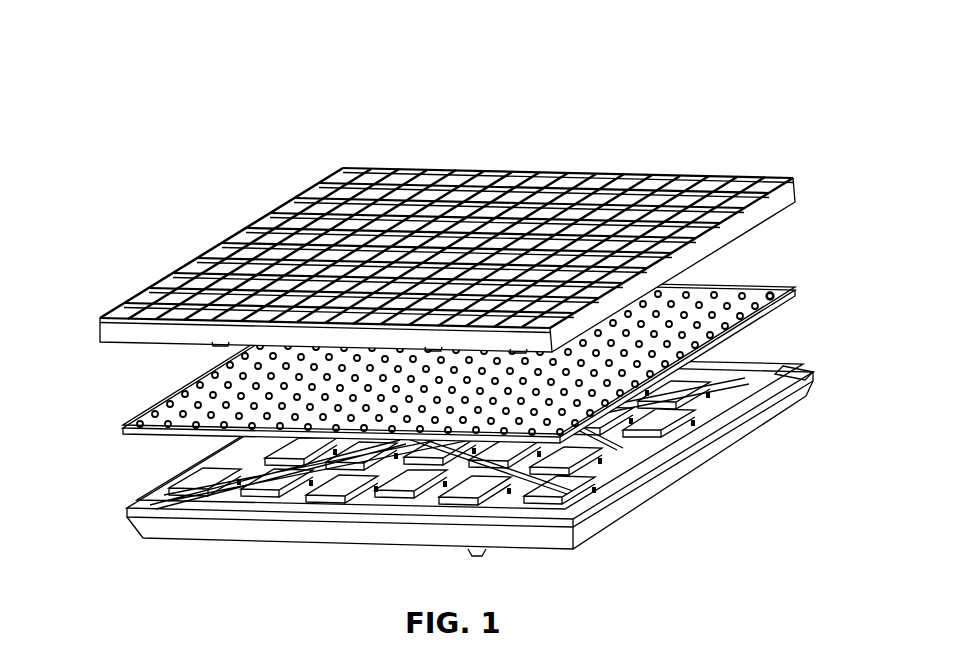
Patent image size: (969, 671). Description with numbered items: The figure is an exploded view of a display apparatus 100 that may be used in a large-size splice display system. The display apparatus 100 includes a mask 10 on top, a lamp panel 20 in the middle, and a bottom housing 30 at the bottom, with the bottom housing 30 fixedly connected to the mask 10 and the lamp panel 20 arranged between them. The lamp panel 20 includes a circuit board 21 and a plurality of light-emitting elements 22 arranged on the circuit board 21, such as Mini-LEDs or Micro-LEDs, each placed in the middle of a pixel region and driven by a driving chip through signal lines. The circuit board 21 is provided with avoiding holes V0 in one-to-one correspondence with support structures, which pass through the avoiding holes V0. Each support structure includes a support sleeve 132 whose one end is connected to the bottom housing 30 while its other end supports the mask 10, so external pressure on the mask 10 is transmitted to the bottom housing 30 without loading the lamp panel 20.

The display apparatus 100 is at (323, 76).
The mask 10 is at (227, 242).
The lamp panel 20 is at (70, 360).
The circuit board 21 is at (167, 402).
The light-emitting elements 22 is at (143, 415).
The avoiding holes V0 is at (765, 291).
The bottom housing 30 is at (807, 400).
The support sleeve 132 is at (785, 370).